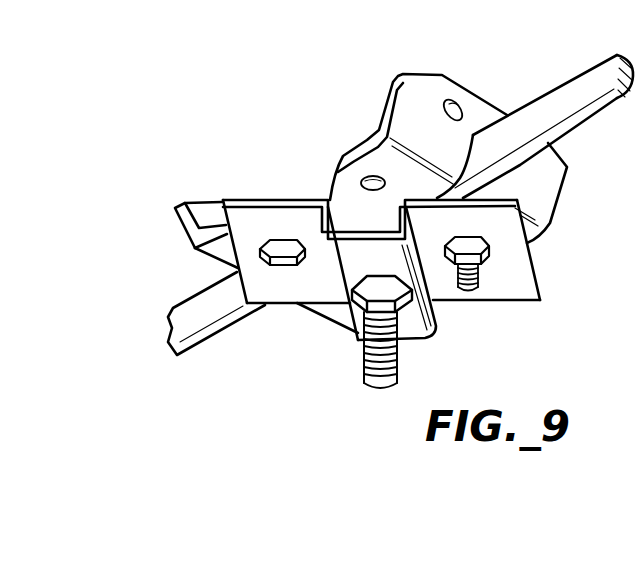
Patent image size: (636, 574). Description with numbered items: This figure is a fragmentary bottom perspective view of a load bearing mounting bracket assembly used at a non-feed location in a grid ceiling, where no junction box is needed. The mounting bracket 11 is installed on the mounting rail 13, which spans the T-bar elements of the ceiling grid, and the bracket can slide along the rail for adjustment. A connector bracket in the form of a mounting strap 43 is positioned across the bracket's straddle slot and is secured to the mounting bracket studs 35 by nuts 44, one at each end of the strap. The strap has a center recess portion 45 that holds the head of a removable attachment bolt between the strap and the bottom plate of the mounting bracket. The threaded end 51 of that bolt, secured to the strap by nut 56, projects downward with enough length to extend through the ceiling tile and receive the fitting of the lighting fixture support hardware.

The mounting bracket 11 is at (333, 313).
The mounting rail 13 is at (575, 92).
The mounting bracket stud 35 is at (468, 292).
The mounting strap 43 is at (258, 217).
The nut 44 is at (262, 251).
The center recess portion 45 is at (350, 253).
The threaded end 51 is at (363, 350).
The nut 56 is at (408, 298).